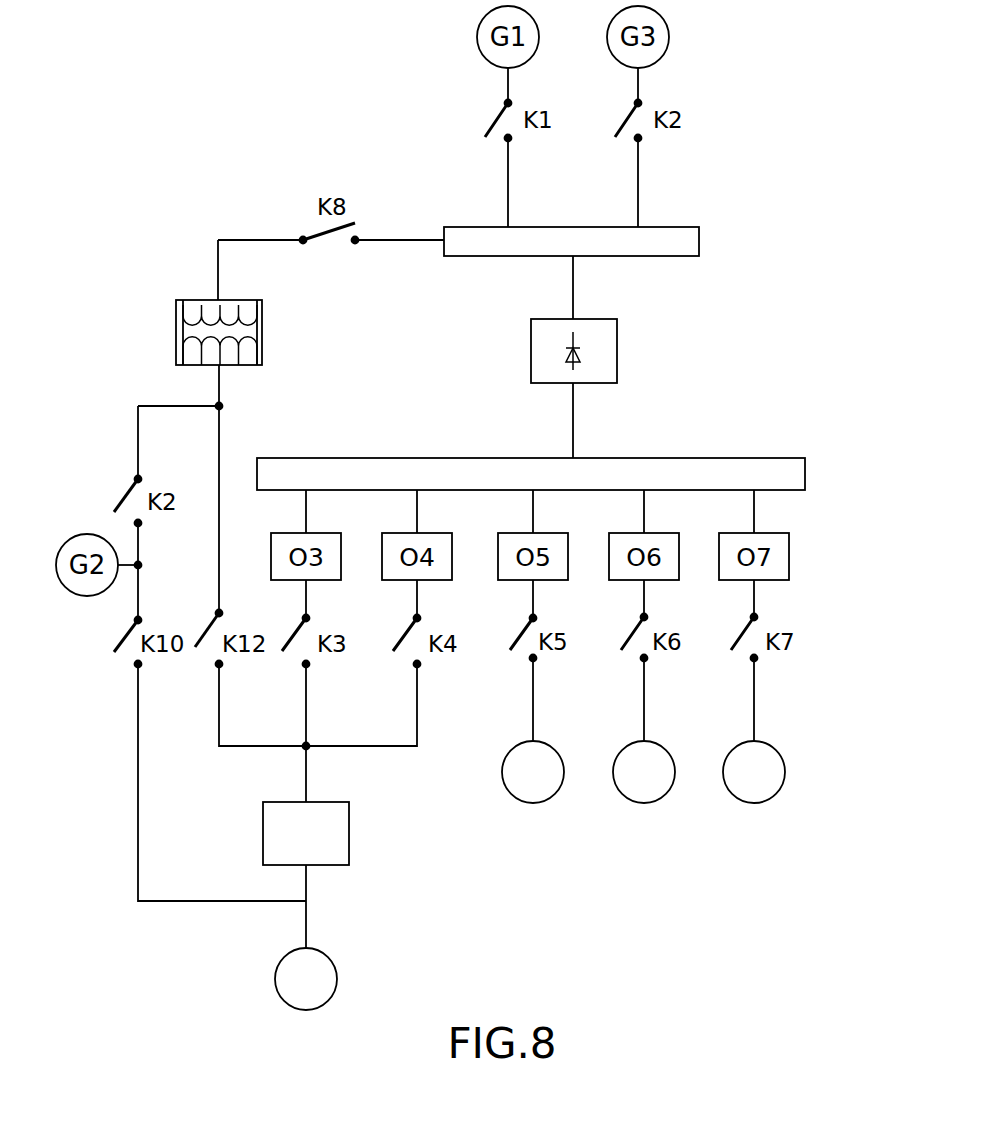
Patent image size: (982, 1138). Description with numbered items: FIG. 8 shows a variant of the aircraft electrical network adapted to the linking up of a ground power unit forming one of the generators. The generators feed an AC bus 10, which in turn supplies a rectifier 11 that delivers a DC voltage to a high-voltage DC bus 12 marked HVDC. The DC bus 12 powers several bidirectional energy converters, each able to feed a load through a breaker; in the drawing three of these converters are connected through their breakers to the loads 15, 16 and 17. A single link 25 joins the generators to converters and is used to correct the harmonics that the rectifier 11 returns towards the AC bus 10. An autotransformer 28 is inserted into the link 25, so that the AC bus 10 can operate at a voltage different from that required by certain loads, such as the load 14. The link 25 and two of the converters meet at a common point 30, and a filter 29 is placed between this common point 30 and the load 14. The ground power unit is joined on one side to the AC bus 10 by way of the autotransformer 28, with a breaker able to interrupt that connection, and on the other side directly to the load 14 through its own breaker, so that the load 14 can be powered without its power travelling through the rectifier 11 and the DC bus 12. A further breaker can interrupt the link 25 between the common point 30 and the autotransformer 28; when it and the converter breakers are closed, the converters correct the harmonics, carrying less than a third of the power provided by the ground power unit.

The AC bus 10 is at (699, 240).
The rectifier 11 is at (617, 352).
The high-voltage DC bus 12 is at (682, 458).
The load 14 is at (306, 937).
The load 15 is at (533, 730).
The load 16 is at (644, 730).
The load 17 is at (754, 730).
The link 25 is at (219, 447).
The autotransformer 28 is at (262, 340).
The filter 29 is at (349, 832).
The common point 30 is at (306, 746).